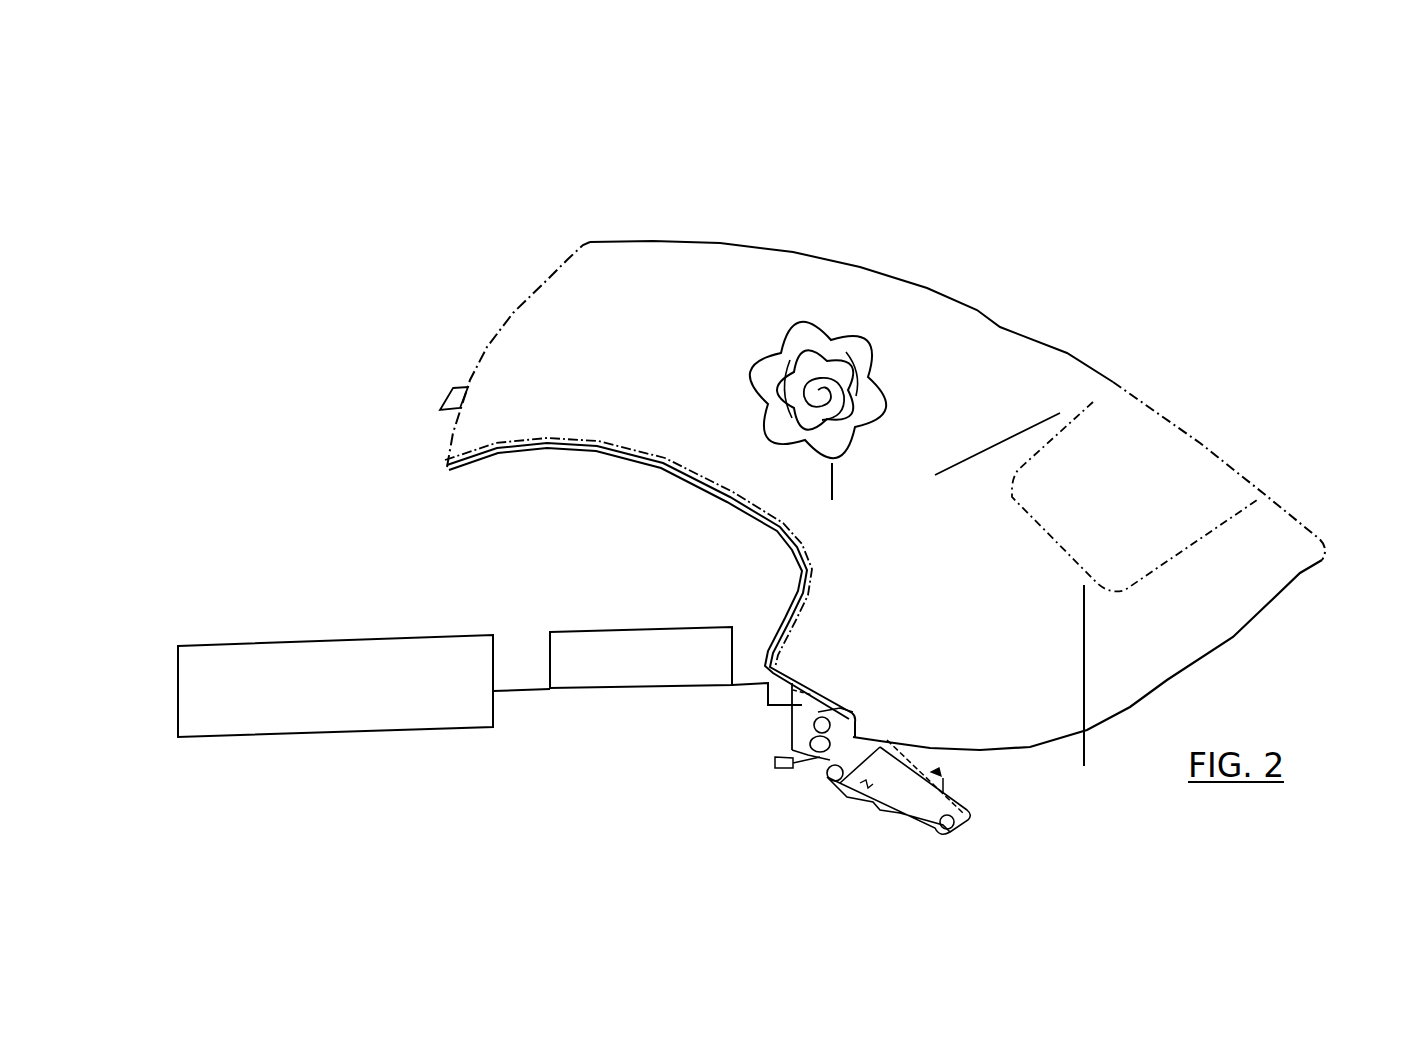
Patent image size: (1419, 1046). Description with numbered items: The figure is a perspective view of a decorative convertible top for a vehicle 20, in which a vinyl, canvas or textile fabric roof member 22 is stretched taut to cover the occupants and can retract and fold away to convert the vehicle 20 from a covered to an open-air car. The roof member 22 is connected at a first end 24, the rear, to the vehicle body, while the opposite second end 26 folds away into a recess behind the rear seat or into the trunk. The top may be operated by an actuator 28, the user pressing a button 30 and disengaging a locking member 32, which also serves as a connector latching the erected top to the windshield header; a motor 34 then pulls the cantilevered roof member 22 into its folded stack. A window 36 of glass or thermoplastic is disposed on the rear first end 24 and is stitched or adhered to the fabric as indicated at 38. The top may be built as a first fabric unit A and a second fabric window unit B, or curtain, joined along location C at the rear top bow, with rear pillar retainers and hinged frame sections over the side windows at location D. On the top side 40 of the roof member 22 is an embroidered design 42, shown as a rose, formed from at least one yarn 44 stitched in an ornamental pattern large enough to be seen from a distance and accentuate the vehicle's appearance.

The vehicle 20 is at (450, 232).
The fabric roof member 22 is at (928, 353).
The first end 24 is at (1233, 637).
The second end 26 is at (479, 362).
The actuator 28 is at (798, 729).
The button 30 is at (393, 635).
The locking member 32 is at (444, 397).
The motor 34 is at (573, 677).
The window 36 is at (1165, 485).
The window attachment 38 is at (1104, 708).
The top side 40 is at (762, 342).
The embroidered design 42 is at (830, 317).
The yarn 44 is at (858, 505).
The first fabric unit A is at (567, 304).
The second fabric window unit B is at (1253, 557).
The attachment location C is at (1097, 487).
The rear pillar retainer location D is at (796, 580).